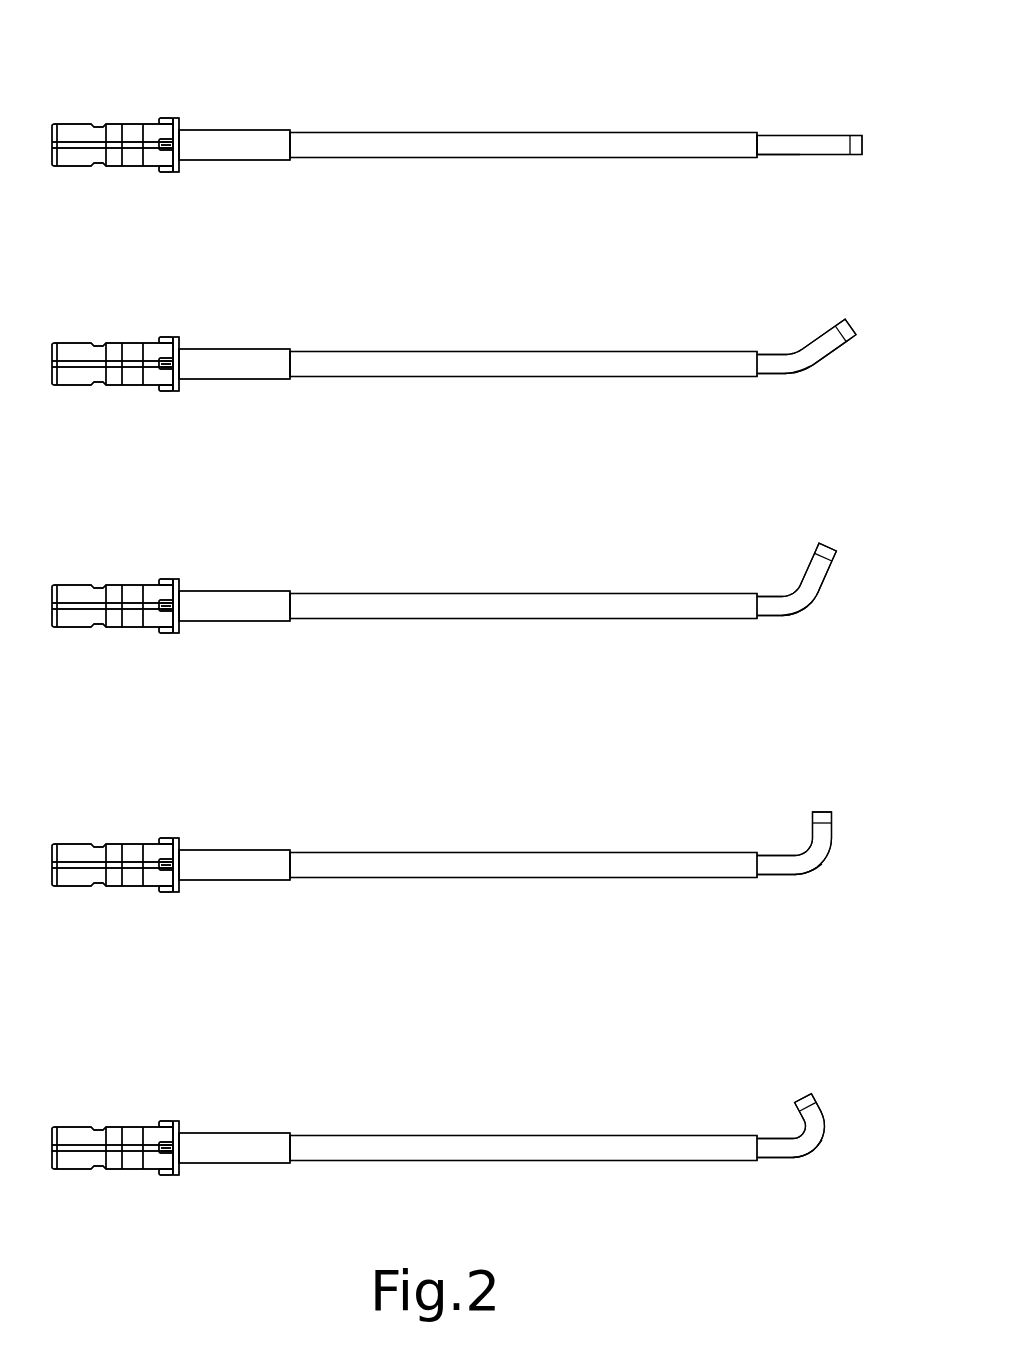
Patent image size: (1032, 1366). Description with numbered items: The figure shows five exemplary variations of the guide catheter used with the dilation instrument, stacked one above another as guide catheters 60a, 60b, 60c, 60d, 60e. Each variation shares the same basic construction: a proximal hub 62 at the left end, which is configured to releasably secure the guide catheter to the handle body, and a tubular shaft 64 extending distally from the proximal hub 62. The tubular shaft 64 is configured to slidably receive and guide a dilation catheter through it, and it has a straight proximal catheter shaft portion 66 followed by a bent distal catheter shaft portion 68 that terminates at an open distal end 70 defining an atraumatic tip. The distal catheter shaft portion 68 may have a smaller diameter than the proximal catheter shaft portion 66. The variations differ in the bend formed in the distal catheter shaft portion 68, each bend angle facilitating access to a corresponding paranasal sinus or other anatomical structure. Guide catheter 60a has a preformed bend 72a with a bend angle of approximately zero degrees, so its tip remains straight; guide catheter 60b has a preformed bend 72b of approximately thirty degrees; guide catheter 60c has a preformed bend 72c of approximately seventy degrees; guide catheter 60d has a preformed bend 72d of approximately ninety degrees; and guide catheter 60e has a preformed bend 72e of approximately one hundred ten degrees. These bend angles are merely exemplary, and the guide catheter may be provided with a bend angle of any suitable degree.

The guide catheter 60a is at (222, 92).
The guide catheter 60b is at (222, 311).
The guide catheter 60c is at (222, 553).
The guide catheter 60d is at (222, 812).
The guide catheter 60e is at (222, 1095).
The proximal hub 62 is at (108, 124).
The tubular shaft 64 is at (345, 130).
The straight proximal catheter shaft portion 66 is at (494, 158).
The bent distal catheter shaft portion 68 is at (808, 158).
The open distal end 70 is at (857, 135).
The preformed bend 72a is at (776, 158).
The preformed bend 72b is at (798, 375).
The preformed bend 72c is at (797, 618).
The preformed bend 72d is at (823, 868).
The preformed bend 72e is at (823, 1150).